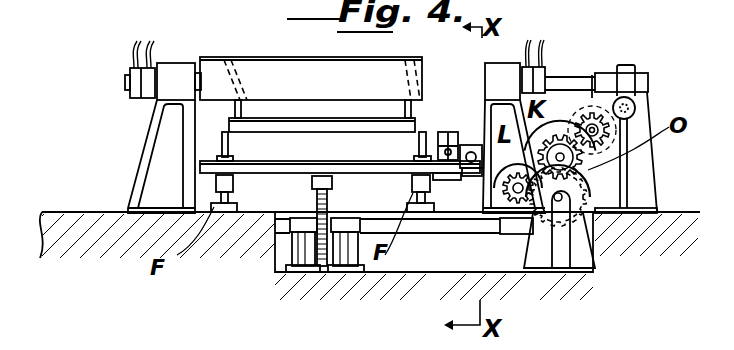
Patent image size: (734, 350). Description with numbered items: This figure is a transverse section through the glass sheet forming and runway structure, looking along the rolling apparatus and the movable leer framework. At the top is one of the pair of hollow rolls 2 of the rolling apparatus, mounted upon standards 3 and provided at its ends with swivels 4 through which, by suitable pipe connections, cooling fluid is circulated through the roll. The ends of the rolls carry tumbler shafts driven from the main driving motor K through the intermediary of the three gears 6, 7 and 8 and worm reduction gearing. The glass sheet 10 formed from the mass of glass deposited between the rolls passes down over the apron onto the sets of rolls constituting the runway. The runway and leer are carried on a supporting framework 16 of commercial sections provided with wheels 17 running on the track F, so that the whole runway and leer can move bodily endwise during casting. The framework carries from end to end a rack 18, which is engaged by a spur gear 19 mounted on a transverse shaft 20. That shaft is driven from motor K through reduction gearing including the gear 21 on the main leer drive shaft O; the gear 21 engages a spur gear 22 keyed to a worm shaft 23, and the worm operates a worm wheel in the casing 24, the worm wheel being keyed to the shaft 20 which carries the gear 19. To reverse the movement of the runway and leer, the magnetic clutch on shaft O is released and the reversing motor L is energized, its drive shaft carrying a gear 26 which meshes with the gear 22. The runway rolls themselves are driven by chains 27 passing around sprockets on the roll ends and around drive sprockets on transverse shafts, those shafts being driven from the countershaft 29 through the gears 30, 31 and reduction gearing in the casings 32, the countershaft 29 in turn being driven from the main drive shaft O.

The hollow roll 2 is at (213, 70).
The standard 3 is at (176, 74).
The swivel 4 is at (133, 72).
The gear 6 is at (571, 143).
The gear 7 is at (593, 122).
The gear 8 is at (642, 73).
The glass sheet 10 is at (340, 92).
The supporting framework 16 is at (213, 165).
The wheel 17 is at (216, 182).
The rack 18 is at (366, 153).
The spur gear 19 is at (314, 191).
The transverse shaft 20 is at (458, 229).
The gear 21 is at (555, 152).
The spur gear 22 is at (592, 174).
The worm shaft 23 is at (612, 215).
The casing 24 is at (567, 250).
The gear 26 is at (497, 178).
The chain 27 is at (428, 133).
The countershaft 29 is at (468, 145).
The gear 30 is at (473, 176).
The gear 31 is at (433, 180).
The casing 32 is at (447, 130).